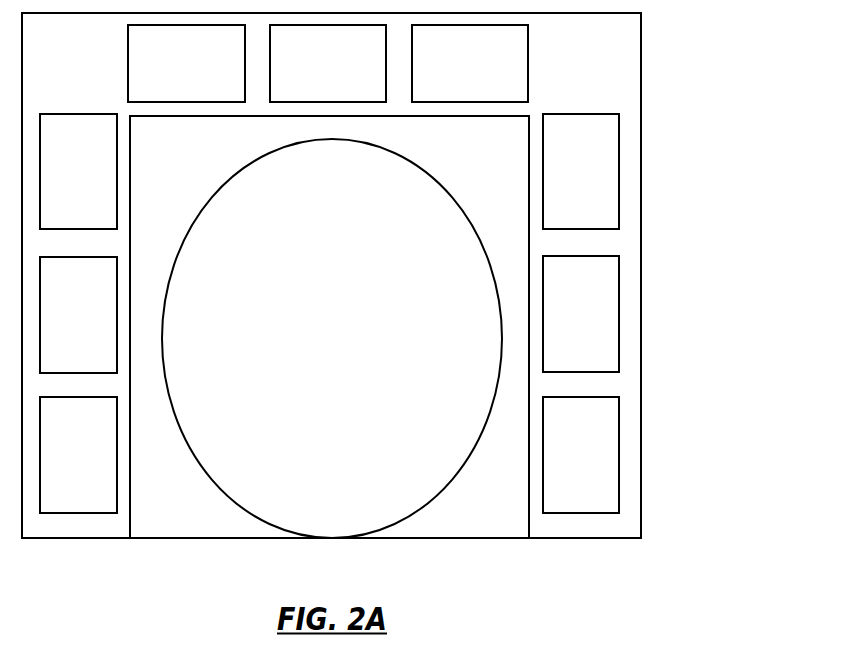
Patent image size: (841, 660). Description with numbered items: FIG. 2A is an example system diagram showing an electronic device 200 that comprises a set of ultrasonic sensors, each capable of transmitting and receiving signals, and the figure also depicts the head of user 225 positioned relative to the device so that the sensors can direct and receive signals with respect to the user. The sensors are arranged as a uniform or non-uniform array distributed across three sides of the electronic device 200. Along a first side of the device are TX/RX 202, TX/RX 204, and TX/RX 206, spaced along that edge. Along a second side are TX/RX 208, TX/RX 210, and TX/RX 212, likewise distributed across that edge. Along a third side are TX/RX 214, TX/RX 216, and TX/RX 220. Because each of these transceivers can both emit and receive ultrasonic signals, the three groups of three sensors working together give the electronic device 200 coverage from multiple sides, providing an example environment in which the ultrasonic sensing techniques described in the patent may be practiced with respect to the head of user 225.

The electronic device 200 is at (649, 60).
The TX/RX 202 is at (99, 480).
The TX/RX 204 is at (99, 340).
The TX/RX 206 is at (99, 196).
The TX/RX 208 is at (207, 90).
The TX/RX 210 is at (348, 90).
The TX/RX 212 is at (490, 90).
The TX/RX 214 is at (601, 196).
The TX/RX 216 is at (601, 340).
The TX/RX 220 is at (601, 480).
The head of user 225 is at (352, 364).